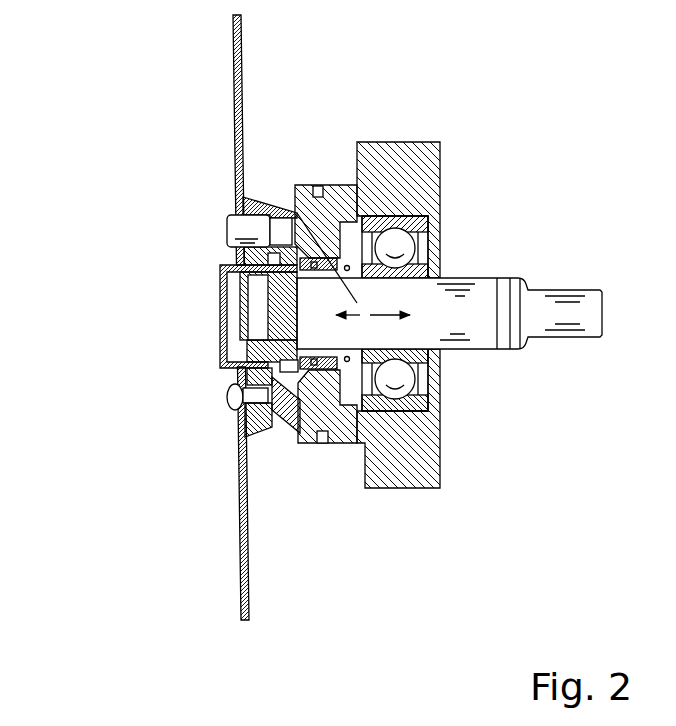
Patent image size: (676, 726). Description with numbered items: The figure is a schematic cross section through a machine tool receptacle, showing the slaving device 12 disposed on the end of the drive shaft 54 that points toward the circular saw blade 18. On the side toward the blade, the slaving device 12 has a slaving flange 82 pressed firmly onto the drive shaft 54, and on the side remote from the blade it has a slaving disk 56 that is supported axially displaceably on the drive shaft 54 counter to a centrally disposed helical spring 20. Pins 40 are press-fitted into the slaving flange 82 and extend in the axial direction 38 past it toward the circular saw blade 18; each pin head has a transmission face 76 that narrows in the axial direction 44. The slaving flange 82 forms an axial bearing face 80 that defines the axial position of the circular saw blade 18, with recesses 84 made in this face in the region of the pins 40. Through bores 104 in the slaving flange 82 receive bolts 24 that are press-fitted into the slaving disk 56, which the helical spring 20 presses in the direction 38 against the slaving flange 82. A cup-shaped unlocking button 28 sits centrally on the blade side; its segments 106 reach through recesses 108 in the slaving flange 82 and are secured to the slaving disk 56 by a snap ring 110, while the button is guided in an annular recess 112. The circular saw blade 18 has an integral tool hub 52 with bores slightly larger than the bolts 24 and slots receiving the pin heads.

The slaving device 12 is at (265, 441).
The circular saw blade 18 is at (224, 100).
The helical spring 20 is at (428, 490).
The bolts 24 is at (247, 229).
The unlocking button 28 is at (242, 330).
The axial direction 38 is at (372, 295).
The pins 40 is at (229, 406).
The axial direction 44 is at (392, 300).
The tool hub 52 is at (224, 262).
The drive shaft 54 is at (468, 318).
The slaving disk 56 is at (316, 446).
The transmission face 76 is at (243, 416).
The axial bearing face 80 is at (250, 196).
The slaving flange 82 is at (265, 200).
The recesses 84 is at (252, 428).
The through bores 104 is at (230, 258).
The segments 106 is at (246, 290).
The recesses 108 is at (433, 413).
The snap ring 110 is at (300, 212).
The annular recess 112 is at (258, 374).